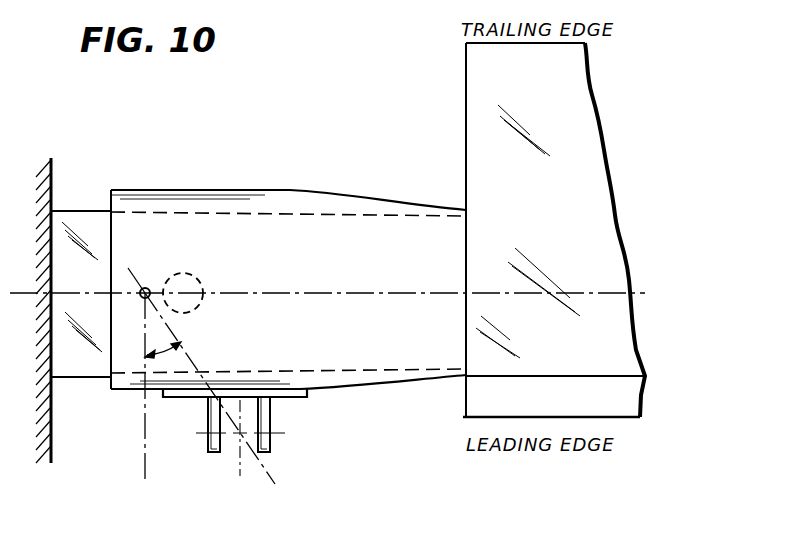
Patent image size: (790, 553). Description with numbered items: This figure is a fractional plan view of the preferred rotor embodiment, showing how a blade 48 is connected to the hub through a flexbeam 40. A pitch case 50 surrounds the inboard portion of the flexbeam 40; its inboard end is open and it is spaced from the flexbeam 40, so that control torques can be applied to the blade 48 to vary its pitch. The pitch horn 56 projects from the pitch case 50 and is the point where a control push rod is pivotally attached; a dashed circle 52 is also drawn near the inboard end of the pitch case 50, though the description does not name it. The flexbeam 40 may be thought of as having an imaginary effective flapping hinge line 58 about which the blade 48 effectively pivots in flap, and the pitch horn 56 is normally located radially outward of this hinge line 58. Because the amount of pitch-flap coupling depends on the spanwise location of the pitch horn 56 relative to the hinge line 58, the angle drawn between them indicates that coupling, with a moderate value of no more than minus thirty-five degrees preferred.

The flexbeam 40 is at (79, 226).
The blade 48 is at (490, 99).
The pitch case 50 is at (343, 190).
The pivot circle 52 is at (186, 283).
The pitch horn 56 is at (270, 420).
The effective flapping hinge line 58 is at (145, 459).